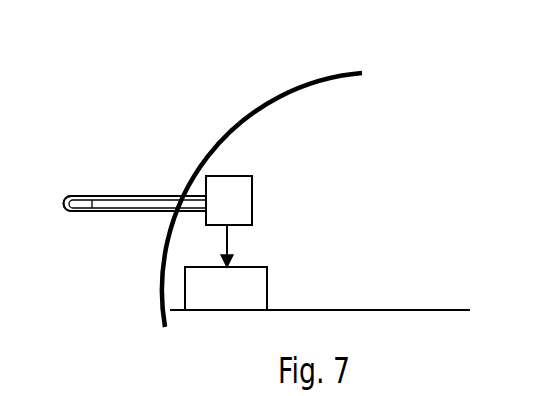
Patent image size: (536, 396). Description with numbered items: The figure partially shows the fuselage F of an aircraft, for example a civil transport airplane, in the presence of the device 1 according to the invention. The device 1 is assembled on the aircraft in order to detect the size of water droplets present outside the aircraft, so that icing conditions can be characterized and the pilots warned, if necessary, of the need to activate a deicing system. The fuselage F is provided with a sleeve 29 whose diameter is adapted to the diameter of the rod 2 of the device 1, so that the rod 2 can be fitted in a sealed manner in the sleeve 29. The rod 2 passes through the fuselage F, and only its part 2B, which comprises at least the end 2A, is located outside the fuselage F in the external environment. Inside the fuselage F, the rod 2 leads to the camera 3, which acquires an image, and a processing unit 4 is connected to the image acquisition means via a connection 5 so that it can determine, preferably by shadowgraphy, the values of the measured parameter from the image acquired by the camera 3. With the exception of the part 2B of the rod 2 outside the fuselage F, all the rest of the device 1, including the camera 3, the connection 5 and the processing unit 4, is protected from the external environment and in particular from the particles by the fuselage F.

The device 1 is at (260, 187).
The rod 2 is at (120, 192).
The end 2A is at (63, 190).
The part 2B is at (125, 216).
The camera 3 is at (252, 207).
The processing unit 4 is at (260, 290).
The connection 5 is at (229, 244).
The sleeve 29 is at (183, 213).
The fuselage F is at (312, 76).